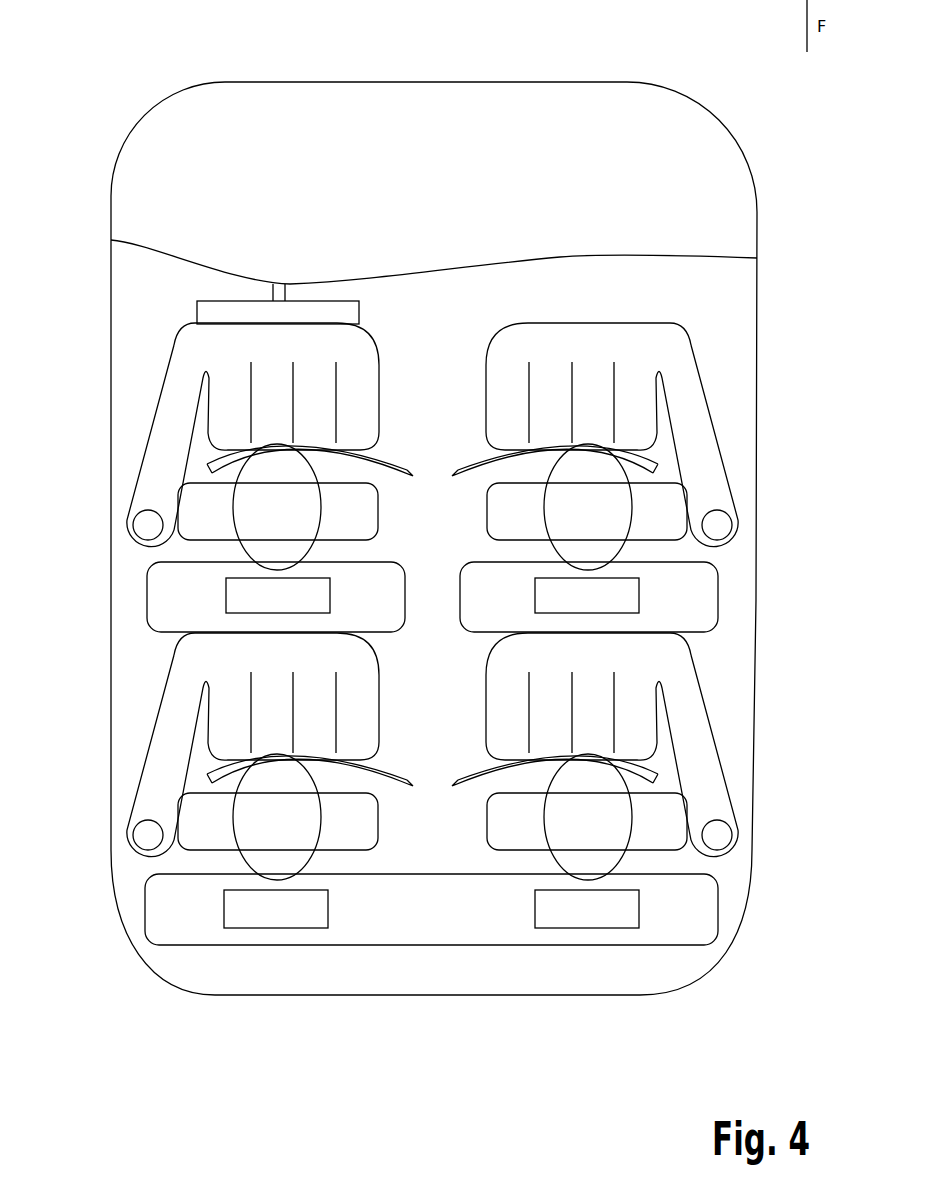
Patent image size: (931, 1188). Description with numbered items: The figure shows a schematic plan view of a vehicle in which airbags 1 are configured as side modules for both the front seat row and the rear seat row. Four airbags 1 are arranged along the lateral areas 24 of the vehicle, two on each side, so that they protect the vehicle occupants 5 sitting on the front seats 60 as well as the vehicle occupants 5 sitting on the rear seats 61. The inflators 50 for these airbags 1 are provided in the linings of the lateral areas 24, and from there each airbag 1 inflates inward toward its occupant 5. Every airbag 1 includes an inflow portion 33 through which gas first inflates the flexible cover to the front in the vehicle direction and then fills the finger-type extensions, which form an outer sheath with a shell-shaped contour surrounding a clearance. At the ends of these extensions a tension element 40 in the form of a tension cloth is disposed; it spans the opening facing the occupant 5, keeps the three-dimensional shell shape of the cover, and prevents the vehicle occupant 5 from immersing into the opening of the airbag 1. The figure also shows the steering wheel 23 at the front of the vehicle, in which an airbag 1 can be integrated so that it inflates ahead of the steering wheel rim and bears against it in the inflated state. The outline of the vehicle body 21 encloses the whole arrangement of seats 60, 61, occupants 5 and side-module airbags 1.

The airbag 1 is at (188, 360).
The vehicle occupant 5 is at (270, 521).
The vehicle body 21 is at (126, 205).
The steering wheel 23 is at (205, 305).
The lateral area 24 is at (110, 408).
The inflow portion 33 is at (148, 488).
The tension element 40 is at (457, 473).
The inflator 50 is at (149, 526).
The front seat 60 is at (147, 600).
The rear seat 61 is at (145, 909).